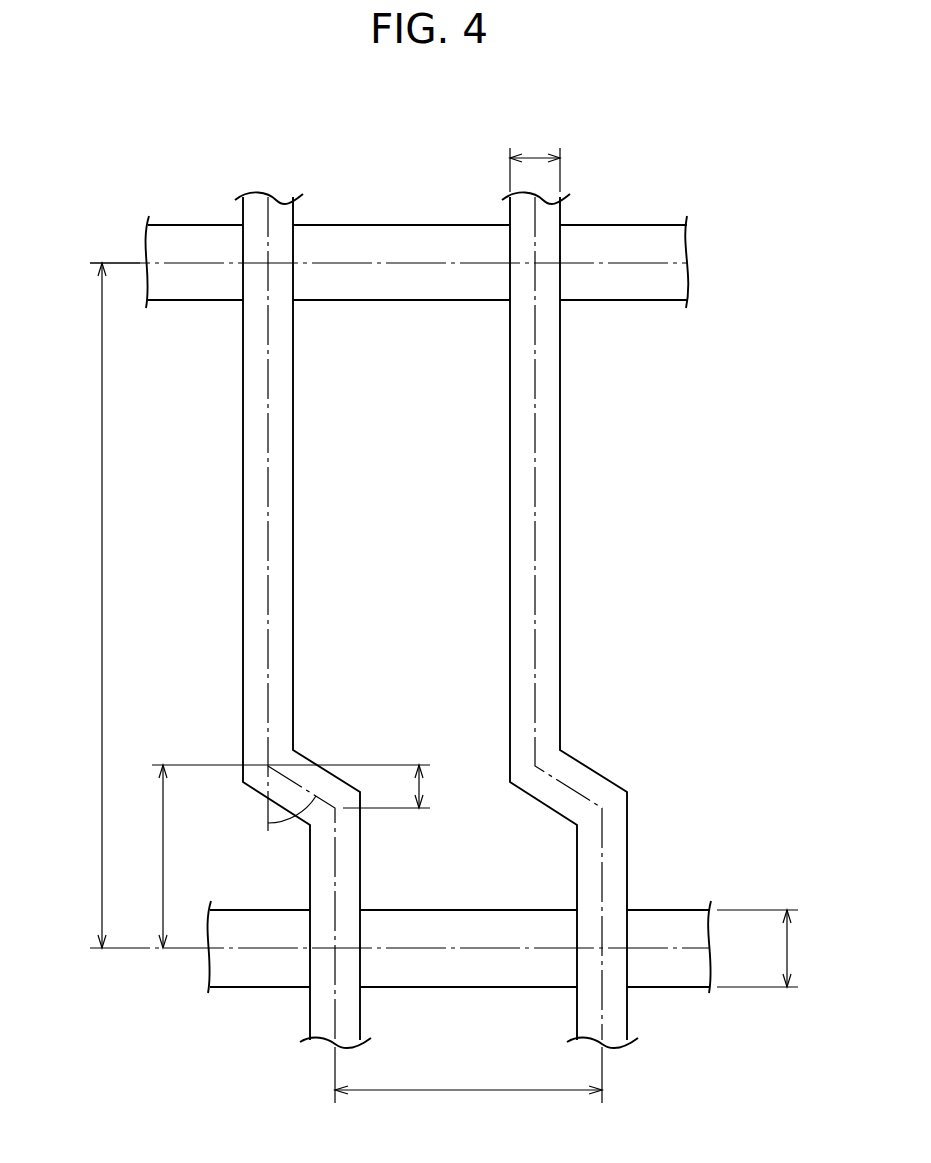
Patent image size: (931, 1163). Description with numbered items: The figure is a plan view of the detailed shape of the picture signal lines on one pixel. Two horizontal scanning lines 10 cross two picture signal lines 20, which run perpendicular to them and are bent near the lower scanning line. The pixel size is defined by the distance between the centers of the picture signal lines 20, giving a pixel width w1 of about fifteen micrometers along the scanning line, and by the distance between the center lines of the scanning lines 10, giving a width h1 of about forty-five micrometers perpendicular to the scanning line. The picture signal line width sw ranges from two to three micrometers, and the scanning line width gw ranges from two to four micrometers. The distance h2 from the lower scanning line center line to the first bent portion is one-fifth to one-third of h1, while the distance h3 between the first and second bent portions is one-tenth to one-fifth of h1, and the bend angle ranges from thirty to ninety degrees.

The scanning line 10 is at (687, 283).
The picture signal line 20 is at (550, 468).
The width h1 of the pixel h1 is at (98, 605).
The distance h2 is at (276, 856).
The distance h3 is at (386, 786).
The width sw of the picture signal line sw is at (535, 157).
The width gw of the scanning line gw is at (757, 948).
The width w1 of the pixel w1 is at (468, 1075).